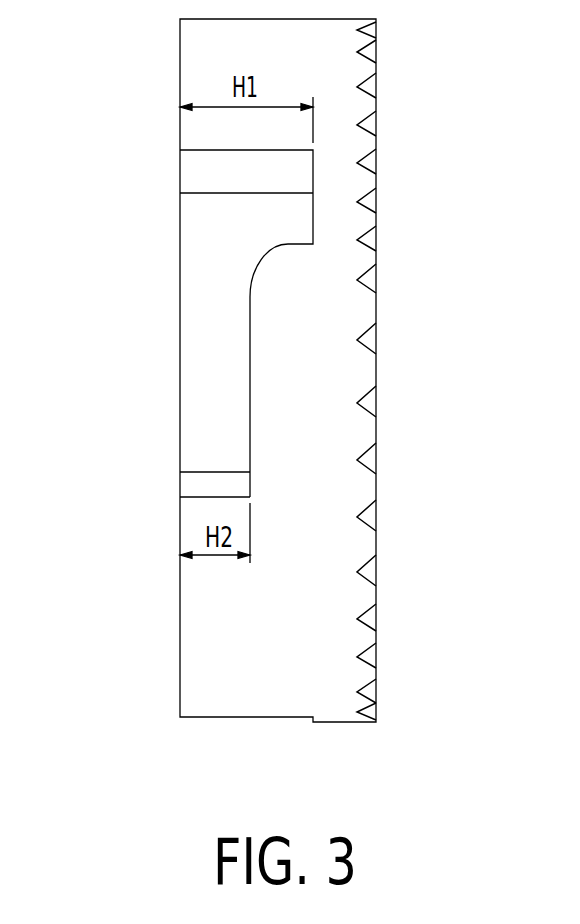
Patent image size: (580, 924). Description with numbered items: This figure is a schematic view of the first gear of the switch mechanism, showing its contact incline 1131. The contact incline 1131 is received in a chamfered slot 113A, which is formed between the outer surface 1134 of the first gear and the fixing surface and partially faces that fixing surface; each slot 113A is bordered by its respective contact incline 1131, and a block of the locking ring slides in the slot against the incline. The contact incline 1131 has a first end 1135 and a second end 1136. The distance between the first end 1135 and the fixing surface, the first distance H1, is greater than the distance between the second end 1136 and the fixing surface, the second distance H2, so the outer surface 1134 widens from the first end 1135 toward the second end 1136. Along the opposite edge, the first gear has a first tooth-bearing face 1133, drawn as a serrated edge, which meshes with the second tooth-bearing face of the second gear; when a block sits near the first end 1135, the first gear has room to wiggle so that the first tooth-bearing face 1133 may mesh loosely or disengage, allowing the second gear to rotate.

The outer surface 1134 is at (213, 48).
The first end 1135 is at (230, 165).
The contact incline 1131 is at (250, 369).
The second end 1136 is at (193, 484).
The first tooth-bearing face 1133 is at (360, 254).
The chamfered slot 113A is at (201, 322).